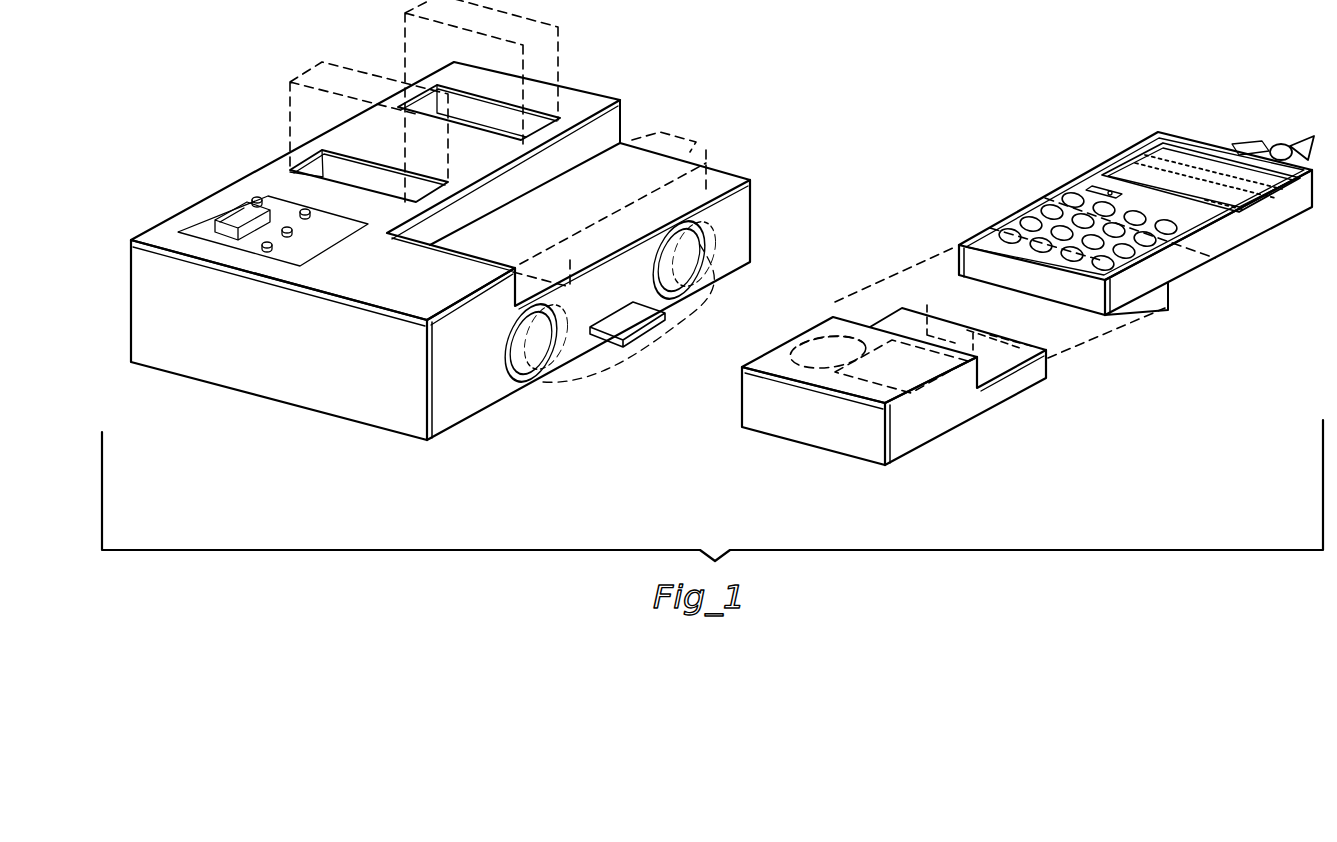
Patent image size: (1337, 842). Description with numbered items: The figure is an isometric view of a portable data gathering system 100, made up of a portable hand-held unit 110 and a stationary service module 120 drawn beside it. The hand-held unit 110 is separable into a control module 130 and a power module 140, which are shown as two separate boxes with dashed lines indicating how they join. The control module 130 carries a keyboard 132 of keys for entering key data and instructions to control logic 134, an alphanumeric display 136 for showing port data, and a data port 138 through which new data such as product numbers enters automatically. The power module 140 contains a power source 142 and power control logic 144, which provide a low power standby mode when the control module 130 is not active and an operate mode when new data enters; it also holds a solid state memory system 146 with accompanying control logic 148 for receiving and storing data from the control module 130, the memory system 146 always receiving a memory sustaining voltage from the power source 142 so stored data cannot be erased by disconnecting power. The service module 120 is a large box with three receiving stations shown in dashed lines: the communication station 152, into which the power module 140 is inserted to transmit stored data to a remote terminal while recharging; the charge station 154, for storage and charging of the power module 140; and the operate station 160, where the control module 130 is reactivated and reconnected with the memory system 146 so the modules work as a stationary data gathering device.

The portable data gathering system 100 is at (738, 534).
The portable hand-held unit 110 is at (1240, 101).
The stationary service module 120 is at (535, 234).
The control module 130 is at (1121, 236).
The keyboard 132 is at (1024, 216).
The control logic 134 is at (990, 228).
The alphanumeric display 136 is at (1121, 165).
The data port 138 is at (1284, 146).
The power module 140 is at (971, 375).
The power source 142 is at (819, 340).
The power control logic 144 is at (931, 314).
The solid state memory system 146 is at (901, 366).
The control logic 148 is at (1001, 325).
The communication station 152 is at (316, 160).
The charge station 154 is at (506, 114).
The operate station 160 is at (690, 186).